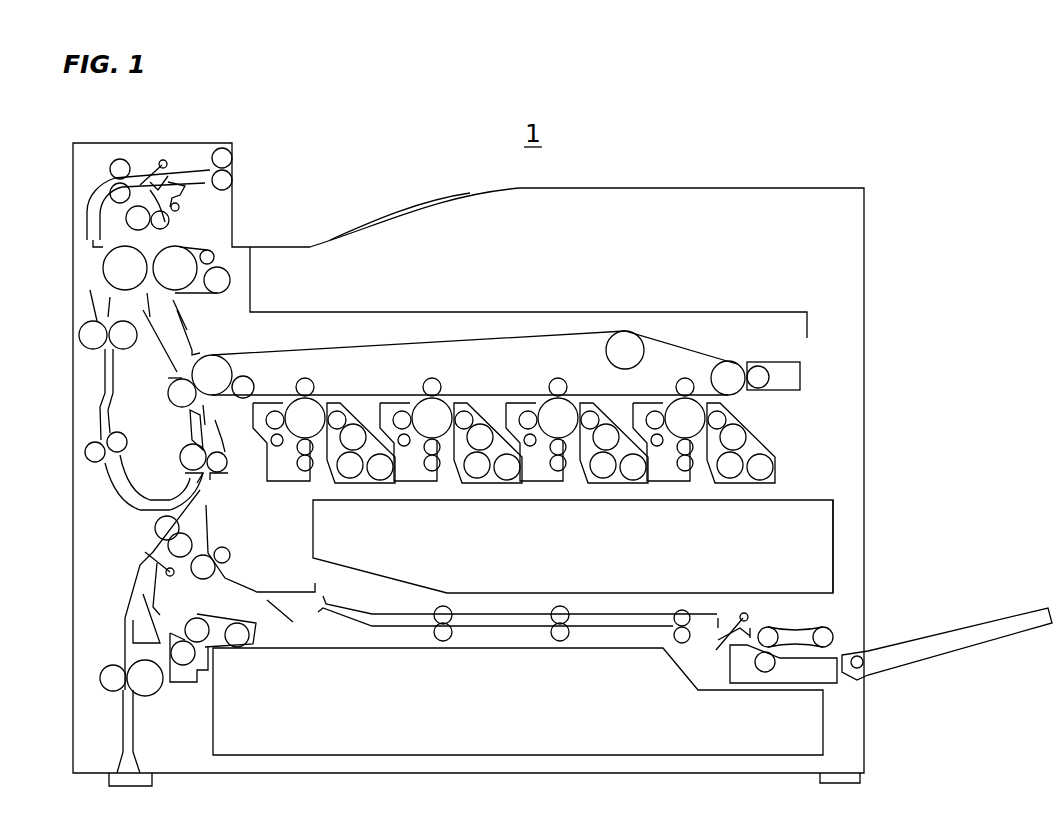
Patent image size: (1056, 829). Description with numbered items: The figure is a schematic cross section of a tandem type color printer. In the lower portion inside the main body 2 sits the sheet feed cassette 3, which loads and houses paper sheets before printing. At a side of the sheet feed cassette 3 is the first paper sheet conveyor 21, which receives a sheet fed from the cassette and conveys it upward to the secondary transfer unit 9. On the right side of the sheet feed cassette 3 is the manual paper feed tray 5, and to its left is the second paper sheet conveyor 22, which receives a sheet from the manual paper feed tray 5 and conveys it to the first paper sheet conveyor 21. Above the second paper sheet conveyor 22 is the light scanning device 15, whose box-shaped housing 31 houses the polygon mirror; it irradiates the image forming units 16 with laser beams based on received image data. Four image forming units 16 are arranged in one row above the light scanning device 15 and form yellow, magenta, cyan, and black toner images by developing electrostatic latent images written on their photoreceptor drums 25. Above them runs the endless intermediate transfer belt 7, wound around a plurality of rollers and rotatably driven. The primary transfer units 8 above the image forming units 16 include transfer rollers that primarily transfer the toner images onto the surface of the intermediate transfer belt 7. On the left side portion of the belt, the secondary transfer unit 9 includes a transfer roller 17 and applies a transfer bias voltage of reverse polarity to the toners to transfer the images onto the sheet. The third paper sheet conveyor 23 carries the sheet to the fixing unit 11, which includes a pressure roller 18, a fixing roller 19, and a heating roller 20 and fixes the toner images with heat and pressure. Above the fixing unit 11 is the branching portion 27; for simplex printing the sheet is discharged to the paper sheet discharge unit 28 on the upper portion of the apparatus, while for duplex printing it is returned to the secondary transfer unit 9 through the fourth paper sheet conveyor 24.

The main body 2 is at (798, 188).
The sheet feed cassette 3 is at (397, 761).
The manual paper feed tray 5 is at (985, 625).
The intermediate transfer belt 7 is at (473, 335).
The primary transfer units 8 is at (305, 378).
The secondary transfer unit 9 is at (172, 413).
The fixing unit 11 is at (100, 262).
The light scanning device 15 is at (835, 527).
The image forming units 16 is at (325, 393).
The transfer roller 17 is at (168, 390).
The pressure roller 18 is at (103, 273).
The fixing roller 19 is at (185, 246).
The heating roller 20 is at (230, 280).
The first paper sheet conveyor 21 is at (143, 553).
The second paper sheet conveyor 22 is at (503, 632).
The third paper sheet conveyor 23 is at (193, 333).
The fourth paper sheet conveyor 24 is at (100, 380).
The photoreceptor drums 25 is at (450, 397).
The branching portion 27 is at (183, 197).
The paper sheet discharge unit 28 is at (392, 213).
The housing 31 is at (833, 537).